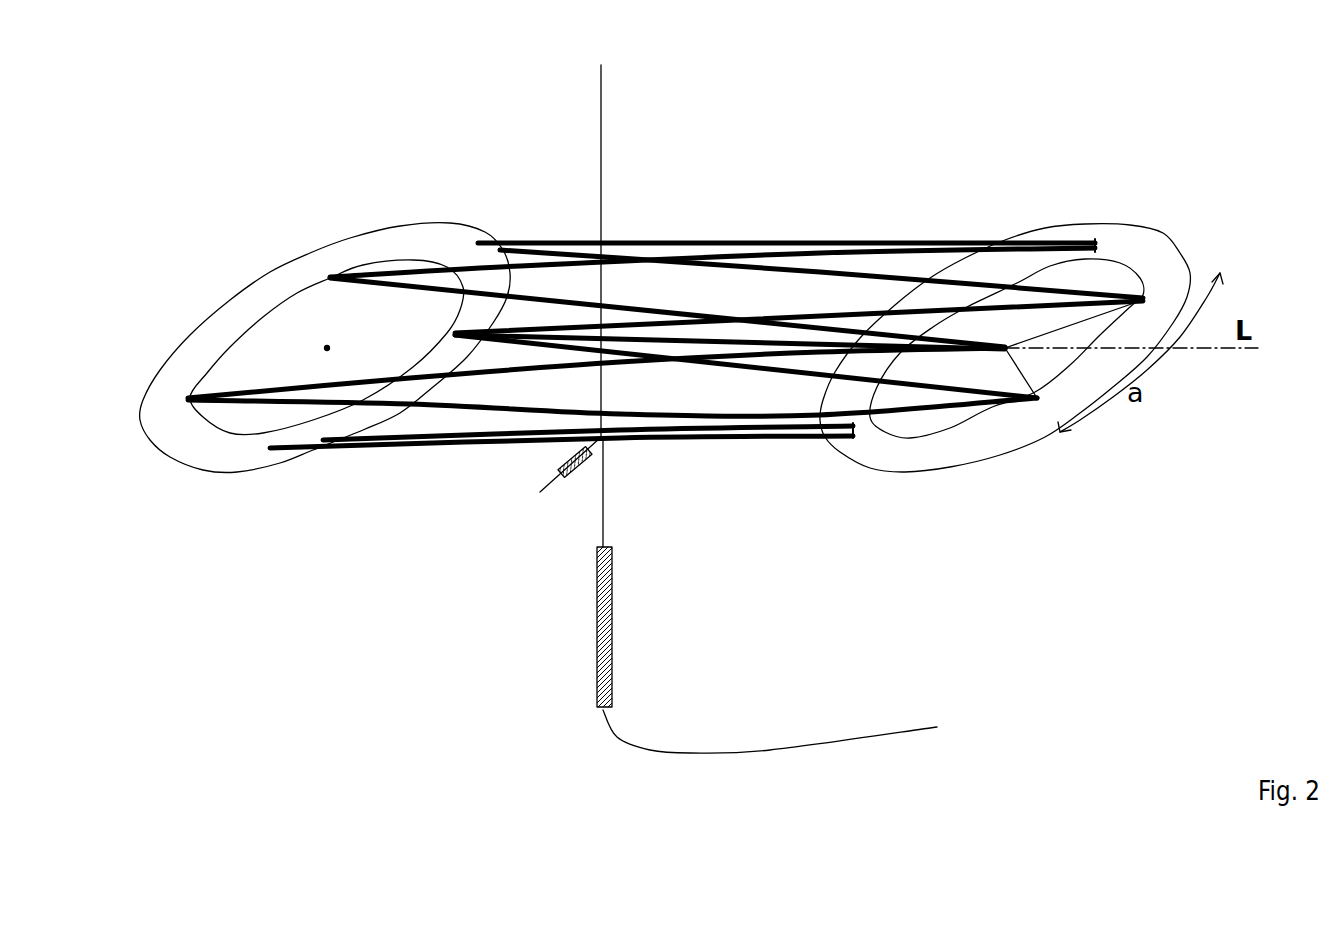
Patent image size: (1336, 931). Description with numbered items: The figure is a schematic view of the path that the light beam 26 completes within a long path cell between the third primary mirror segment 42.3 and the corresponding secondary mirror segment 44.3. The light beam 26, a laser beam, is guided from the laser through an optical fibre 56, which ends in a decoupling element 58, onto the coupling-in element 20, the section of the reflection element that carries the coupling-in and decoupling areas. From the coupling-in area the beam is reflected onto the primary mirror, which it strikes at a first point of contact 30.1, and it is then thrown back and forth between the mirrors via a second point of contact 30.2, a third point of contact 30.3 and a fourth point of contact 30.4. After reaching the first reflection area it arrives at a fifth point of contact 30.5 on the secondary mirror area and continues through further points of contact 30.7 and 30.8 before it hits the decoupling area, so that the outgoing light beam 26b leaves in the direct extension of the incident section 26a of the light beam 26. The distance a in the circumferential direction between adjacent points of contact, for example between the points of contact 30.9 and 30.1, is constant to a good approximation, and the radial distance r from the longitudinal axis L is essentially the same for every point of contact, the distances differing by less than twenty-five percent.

The coupling-in element 20 is at (540, 492).
The light beam 26 is at (700, 438).
The incident section of the light beam 26a is at (605, 527).
The outgoing light beam 26b is at (601, 90).
The first point of contact 30.1 is at (855, 437).
The second point of contact 30.2 is at (185, 396).
The third point of contact 30.3 is at (1003, 348).
The fourth point of contact 30.4 is at (330, 277).
The fifth point of contact 30.5 is at (1090, 240).
The point of contact 30.7 is at (1142, 300).
The point of contact 30.8 is at (455, 333).
The point of contact 30.9 is at (1035, 402).
The third primary mirror segment 42.3 is at (1158, 252).
The secondary mirror segment 44.3 is at (237, 310).
The optical fibre 56 is at (768, 750).
The decoupling element 58 is at (605, 637).